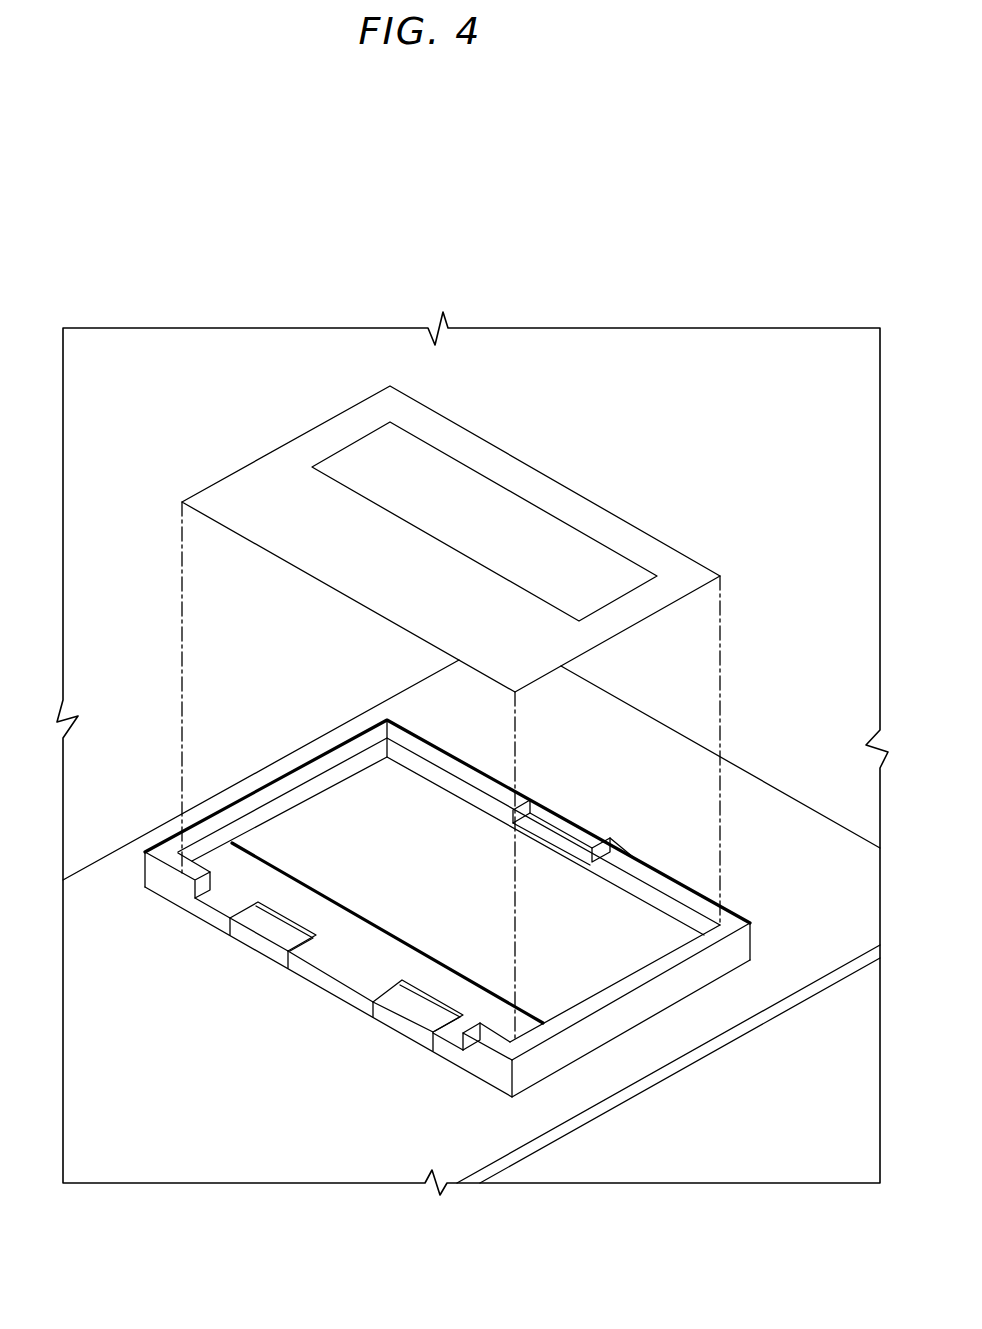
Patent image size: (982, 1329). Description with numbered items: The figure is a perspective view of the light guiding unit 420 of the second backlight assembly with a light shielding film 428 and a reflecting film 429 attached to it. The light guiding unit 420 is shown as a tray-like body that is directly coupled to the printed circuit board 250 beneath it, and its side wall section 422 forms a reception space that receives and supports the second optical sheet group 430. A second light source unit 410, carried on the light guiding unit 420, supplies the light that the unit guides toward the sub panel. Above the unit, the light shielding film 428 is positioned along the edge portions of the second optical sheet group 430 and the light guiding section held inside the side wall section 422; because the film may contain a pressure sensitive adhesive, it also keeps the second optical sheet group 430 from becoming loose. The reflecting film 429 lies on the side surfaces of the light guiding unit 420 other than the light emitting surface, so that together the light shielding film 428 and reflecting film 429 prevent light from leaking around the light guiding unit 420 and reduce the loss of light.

The printed circuit board 250 is at (598, 1112).
The light shielding film 428 is at (572, 504).
The light guiding unit 420 is at (248, 882).
The reflecting film 429 is at (318, 752).
The second optical sheet group 430 is at (530, 873).
The side wall section 422 is at (638, 873).
The second light source unit 410 is at (400, 1033).